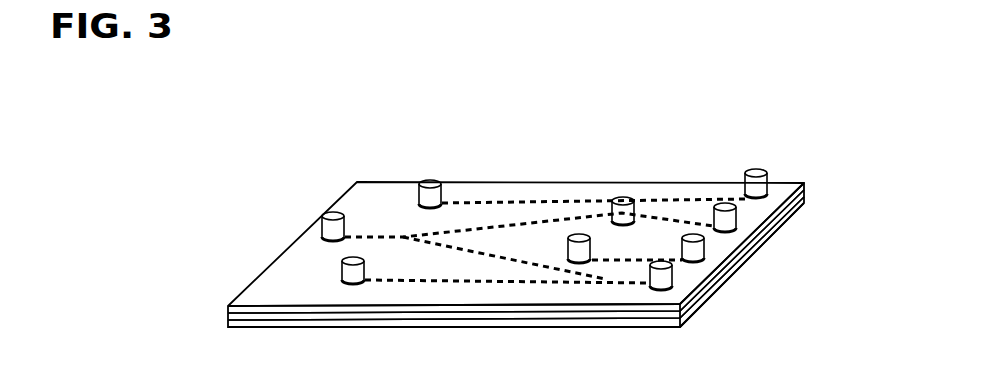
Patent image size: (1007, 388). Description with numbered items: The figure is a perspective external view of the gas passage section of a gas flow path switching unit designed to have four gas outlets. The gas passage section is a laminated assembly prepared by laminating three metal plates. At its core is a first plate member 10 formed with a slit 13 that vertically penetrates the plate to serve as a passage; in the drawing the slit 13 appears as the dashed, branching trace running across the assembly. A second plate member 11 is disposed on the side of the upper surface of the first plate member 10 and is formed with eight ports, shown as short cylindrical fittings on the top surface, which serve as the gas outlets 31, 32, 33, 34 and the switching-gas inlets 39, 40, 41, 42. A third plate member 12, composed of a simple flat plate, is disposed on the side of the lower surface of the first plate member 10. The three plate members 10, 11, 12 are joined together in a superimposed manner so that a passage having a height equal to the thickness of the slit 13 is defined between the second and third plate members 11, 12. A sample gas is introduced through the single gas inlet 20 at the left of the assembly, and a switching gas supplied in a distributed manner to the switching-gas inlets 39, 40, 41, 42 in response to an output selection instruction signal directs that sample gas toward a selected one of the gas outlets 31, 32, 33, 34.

The first plate member 10 is at (228, 316).
The second plate member 11 is at (228, 307).
The third plate member 12 is at (228, 327).
The slit 13 is at (515, 195).
The gas inlet 20 is at (330, 213).
The gas outlet 31 is at (672, 280).
The gas outlet 32 is at (737, 218).
The gas outlet 33 is at (705, 250).
The gas outlet 34 is at (767, 186).
The switching-gas inlet 39 is at (433, 181).
The switching-gas inlet 40 is at (623, 197).
The switching-gas inlet 41 is at (578, 234).
The switching-gas inlet 42 is at (342, 267).